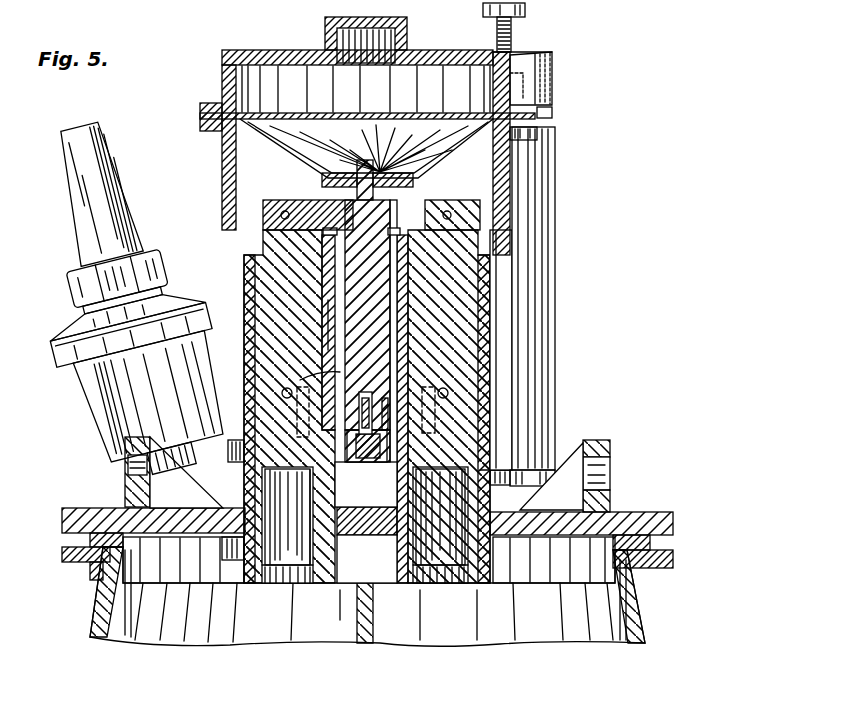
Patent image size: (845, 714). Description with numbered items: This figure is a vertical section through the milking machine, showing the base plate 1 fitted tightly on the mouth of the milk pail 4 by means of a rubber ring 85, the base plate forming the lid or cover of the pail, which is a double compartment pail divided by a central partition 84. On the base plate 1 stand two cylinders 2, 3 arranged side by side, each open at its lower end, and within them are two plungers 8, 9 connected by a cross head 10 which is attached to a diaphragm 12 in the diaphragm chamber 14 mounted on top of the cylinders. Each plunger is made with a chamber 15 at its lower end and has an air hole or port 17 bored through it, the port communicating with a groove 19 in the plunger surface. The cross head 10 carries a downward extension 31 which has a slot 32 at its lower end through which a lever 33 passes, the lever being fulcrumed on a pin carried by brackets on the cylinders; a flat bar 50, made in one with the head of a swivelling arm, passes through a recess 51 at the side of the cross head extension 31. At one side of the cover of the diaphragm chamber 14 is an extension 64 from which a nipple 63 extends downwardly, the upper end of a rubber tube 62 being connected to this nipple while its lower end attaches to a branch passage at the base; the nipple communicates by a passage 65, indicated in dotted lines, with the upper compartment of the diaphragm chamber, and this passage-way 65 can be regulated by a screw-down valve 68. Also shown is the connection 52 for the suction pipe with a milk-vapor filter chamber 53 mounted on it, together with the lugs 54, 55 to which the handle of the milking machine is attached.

The base plate 1 is at (545, 580).
The cylinder 2 is at (252, 282).
The cylinder 3 is at (480, 262).
The milk pail 4 is at (500, 635).
The plunger 8 is at (250, 252).
The plunger 9 is at (440, 285).
The cross head 10 is at (345, 212).
The diaphragm 12 is at (300, 130).
The diaphragm chamber 14 is at (268, 76).
The chamber 15 is at (290, 555).
The air hole or port 17 is at (368, 355).
The groove 19 is at (255, 442).
The downward extension 31 is at (507, 232).
The slot 32 is at (350, 350).
The lever 33 is at (372, 425).
The flat bar 50 is at (490, 405).
The recess 51 is at (490, 318).
The suction connection 52 is at (92, 193).
The milk-vapor filter chamber 53 is at (110, 316).
The lug 54 is at (140, 472).
The lug 55 is at (600, 478).
The rubber tube 62 is at (556, 192).
The nipple 63 is at (553, 113).
The extension 64 is at (553, 76).
The passage 65 is at (553, 52).
The screw-down valve 68 is at (526, 10).
The central partition 84 is at (360, 645).
The rubber ring 85 is at (92, 538).